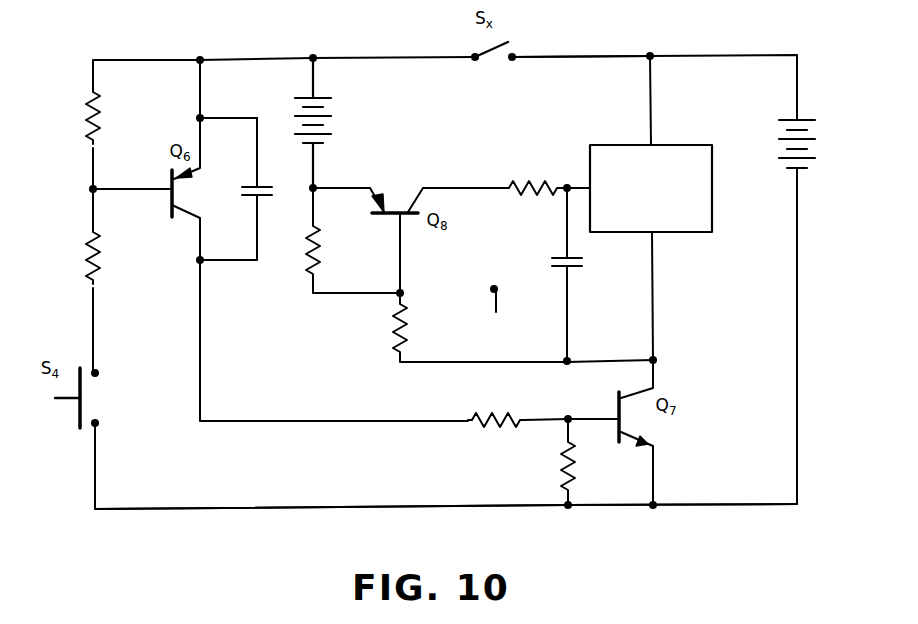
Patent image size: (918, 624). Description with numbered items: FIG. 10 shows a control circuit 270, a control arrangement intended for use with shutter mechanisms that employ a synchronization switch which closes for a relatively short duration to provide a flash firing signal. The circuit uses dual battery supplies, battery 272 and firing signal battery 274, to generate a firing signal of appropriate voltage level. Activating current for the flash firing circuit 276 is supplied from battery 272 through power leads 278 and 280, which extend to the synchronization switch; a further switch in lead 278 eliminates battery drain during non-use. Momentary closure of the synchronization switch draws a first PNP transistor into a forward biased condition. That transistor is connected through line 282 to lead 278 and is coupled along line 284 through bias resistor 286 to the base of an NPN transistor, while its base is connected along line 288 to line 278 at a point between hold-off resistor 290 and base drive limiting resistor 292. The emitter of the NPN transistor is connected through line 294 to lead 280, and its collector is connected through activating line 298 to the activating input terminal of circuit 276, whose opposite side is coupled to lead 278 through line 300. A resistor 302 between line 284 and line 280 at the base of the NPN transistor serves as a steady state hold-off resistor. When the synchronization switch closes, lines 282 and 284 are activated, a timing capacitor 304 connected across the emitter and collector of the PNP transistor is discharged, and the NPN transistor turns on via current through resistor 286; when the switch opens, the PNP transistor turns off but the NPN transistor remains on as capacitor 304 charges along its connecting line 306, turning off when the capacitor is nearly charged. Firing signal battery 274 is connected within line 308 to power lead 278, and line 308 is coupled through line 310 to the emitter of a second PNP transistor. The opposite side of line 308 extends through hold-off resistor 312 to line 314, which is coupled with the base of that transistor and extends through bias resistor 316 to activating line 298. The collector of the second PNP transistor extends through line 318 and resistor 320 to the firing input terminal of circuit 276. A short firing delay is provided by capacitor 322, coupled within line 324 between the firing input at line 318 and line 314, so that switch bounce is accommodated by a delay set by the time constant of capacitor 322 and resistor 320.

The control circuit 270 is at (810, 80).
The battery 272 is at (817, 133).
The firing signal battery 274 is at (332, 118).
The flash firing circuit 276 is at (696, 144).
The power lead 278 is at (547, 55).
The power lead 280 is at (400, 506).
The line 282 is at (202, 103).
The line 284 is at (200, 316).
The bias resistor 286 is at (508, 412).
The line 288 is at (140, 191).
The hold-off resistor 290 is at (85, 117).
The base drive limiting resistor 292 is at (88, 258).
The line 294 is at (655, 472).
The activating line 298 is at (655, 305).
The line 300 is at (652, 104).
The resistor 302 is at (555, 468).
The timing capacitor 304 is at (273, 190).
The conductor 306 is at (257, 160).
The line 308 is at (318, 170).
The line 310 is at (345, 187).
The hold-off resistor 312 is at (322, 247).
The line 314 is at (402, 264).
The bias resistor 316 is at (406, 328).
The line 318 is at (438, 188).
The resistor 320 is at (531, 183).
The capacitor 322 is at (578, 267).
The line 324 is at (565, 236).